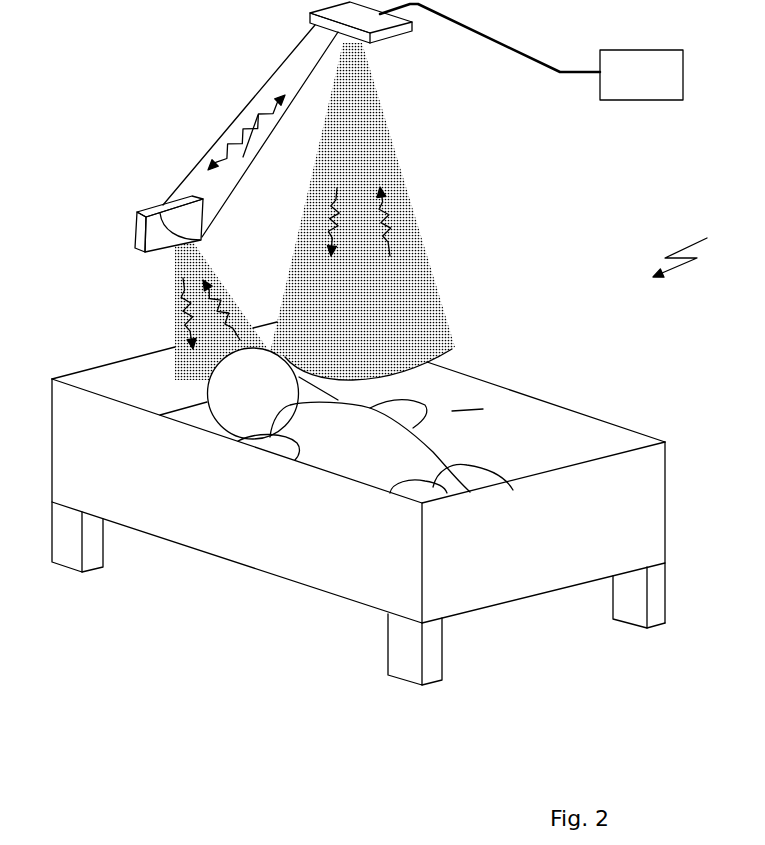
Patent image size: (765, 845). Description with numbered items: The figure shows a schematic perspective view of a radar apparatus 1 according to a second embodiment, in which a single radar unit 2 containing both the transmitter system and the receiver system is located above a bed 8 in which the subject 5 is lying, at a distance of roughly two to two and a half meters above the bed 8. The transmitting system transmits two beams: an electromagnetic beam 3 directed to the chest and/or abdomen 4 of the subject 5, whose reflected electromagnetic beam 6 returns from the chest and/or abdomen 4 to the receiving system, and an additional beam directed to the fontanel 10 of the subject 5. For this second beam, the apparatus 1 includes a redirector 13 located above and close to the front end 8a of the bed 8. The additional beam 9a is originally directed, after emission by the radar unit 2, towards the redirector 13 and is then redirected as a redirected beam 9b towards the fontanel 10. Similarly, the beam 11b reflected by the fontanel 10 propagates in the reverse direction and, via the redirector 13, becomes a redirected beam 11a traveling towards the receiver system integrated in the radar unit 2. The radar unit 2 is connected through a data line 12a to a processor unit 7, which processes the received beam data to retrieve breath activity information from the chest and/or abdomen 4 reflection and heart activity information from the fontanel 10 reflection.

The radar apparatus 1 is at (689, 247).
The single radar unit 2 is at (310, 15).
The electromagnetic beam 3 is at (337, 195).
The chest and/or abdomen 4 is at (350, 450).
The subject 5 is at (385, 448).
The reflected electromagnetic beam 6 is at (392, 248).
The processor unit 7 is at (665, 83).
The bed 8 is at (553, 563).
The front end of the bed 8a is at (142, 388).
The additional beam 9a is at (215, 150).
The redirected beam 9b is at (175, 287).
The fontanel 10 is at (227, 370).
The redirected beam 11a is at (250, 148).
The reflected beam 11b is at (218, 298).
The data line 12a is at (493, 45).
The redirector 13 is at (135, 227).